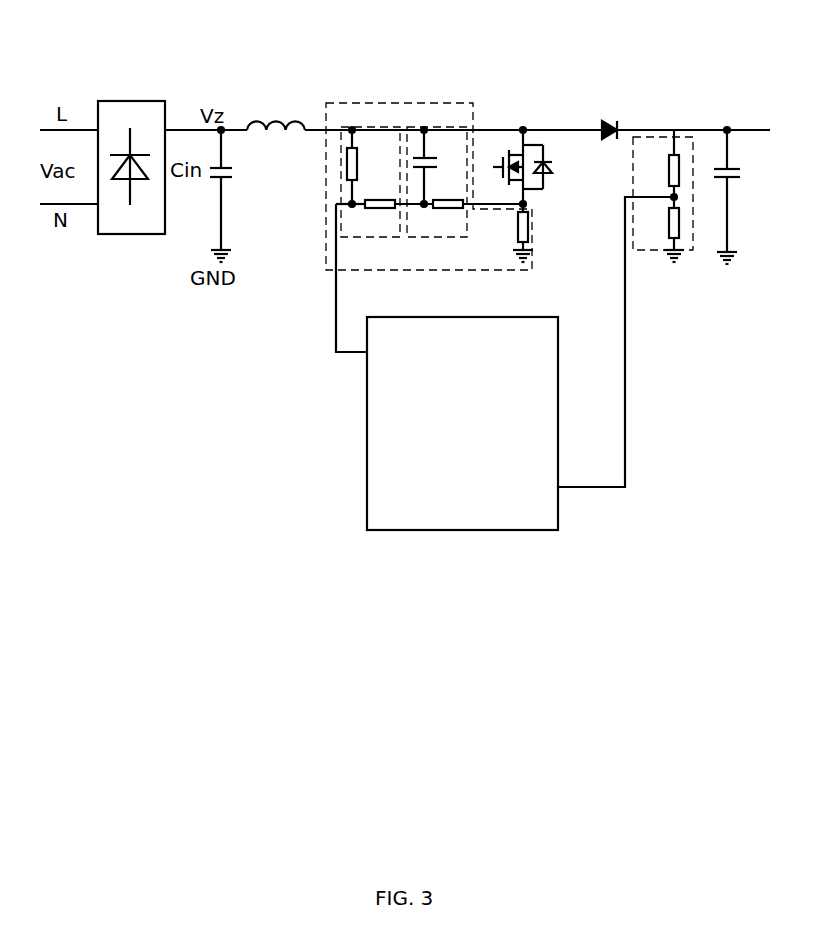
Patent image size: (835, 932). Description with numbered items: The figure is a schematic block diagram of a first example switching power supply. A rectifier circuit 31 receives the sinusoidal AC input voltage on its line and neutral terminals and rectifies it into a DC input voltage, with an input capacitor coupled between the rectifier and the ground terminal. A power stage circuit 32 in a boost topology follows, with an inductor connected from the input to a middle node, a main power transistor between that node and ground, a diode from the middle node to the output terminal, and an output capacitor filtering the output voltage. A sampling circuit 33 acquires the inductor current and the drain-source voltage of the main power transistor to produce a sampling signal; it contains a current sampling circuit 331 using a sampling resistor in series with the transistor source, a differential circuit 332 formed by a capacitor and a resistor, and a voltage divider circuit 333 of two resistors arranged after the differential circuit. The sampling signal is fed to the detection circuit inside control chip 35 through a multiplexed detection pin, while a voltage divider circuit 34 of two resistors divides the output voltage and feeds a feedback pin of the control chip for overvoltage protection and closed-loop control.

The rectifier circuit 31 is at (137, 234).
The power stage circuit 32 is at (522, 76).
The sampling circuit 33 is at (532, 271).
The current sampling circuit 331 is at (517, 213).
The differential circuit 332 is at (428, 238).
The voltage divider circuit 333 is at (377, 238).
The voltage divider circuit 34 is at (693, 214).
The control chip 35 is at (462, 439).